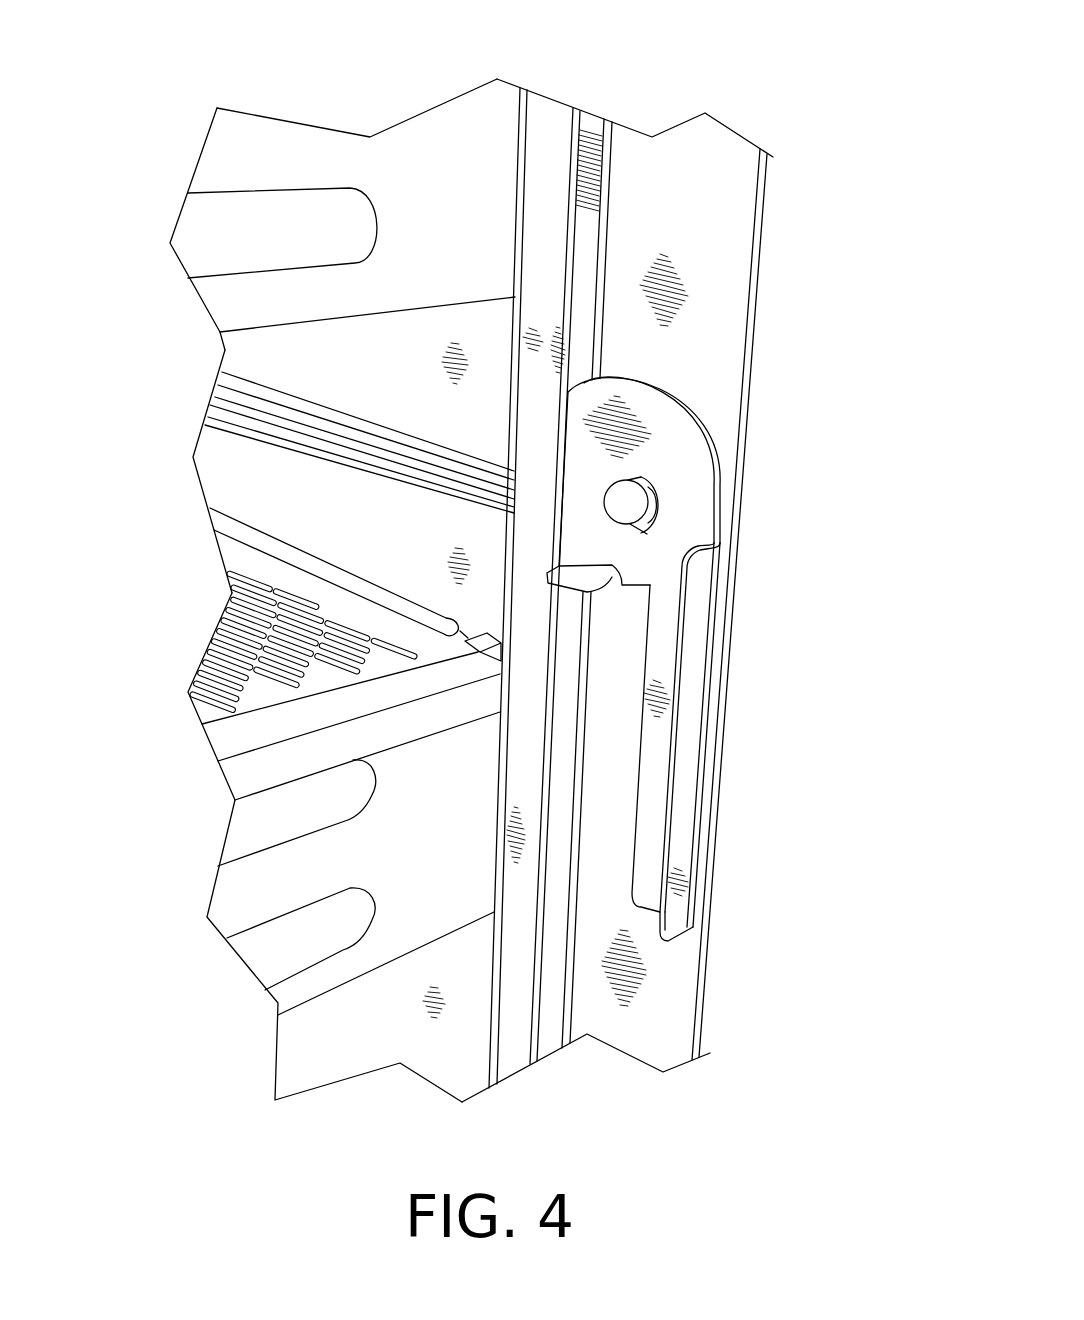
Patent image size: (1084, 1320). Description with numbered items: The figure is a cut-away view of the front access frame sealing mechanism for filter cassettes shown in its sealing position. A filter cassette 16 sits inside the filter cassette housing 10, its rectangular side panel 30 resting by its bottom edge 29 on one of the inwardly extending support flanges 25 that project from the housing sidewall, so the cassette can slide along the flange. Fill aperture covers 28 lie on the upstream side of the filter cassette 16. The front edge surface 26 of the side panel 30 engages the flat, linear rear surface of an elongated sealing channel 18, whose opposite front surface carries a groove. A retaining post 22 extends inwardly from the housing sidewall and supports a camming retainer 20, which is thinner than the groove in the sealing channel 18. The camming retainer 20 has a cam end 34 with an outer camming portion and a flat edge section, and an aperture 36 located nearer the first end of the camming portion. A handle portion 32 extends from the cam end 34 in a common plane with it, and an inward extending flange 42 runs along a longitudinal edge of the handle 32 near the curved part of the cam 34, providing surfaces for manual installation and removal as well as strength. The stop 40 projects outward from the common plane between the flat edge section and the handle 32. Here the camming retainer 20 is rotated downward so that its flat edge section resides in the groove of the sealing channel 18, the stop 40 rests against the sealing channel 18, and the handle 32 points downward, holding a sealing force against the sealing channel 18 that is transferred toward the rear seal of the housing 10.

The filter cassette housing 10 is at (738, 105).
The filter cassette 16 is at (267, 890).
The sealing channel 18 is at (517, 1013).
The camming retainer 20 is at (726, 587).
The retaining post 22 is at (632, 485).
The support flange 25 is at (335, 428).
The front edge surface 26 is at (523, 138).
The fill aperture cover 28 is at (228, 245).
The bottom edge 29 is at (407, 445).
The side panel 30 is at (402, 340).
The handle portion 32 is at (658, 740).
The cam end 34 is at (683, 450).
The aperture 36 is at (672, 507).
The stop 40 is at (603, 593).
The flange 42 is at (685, 815).